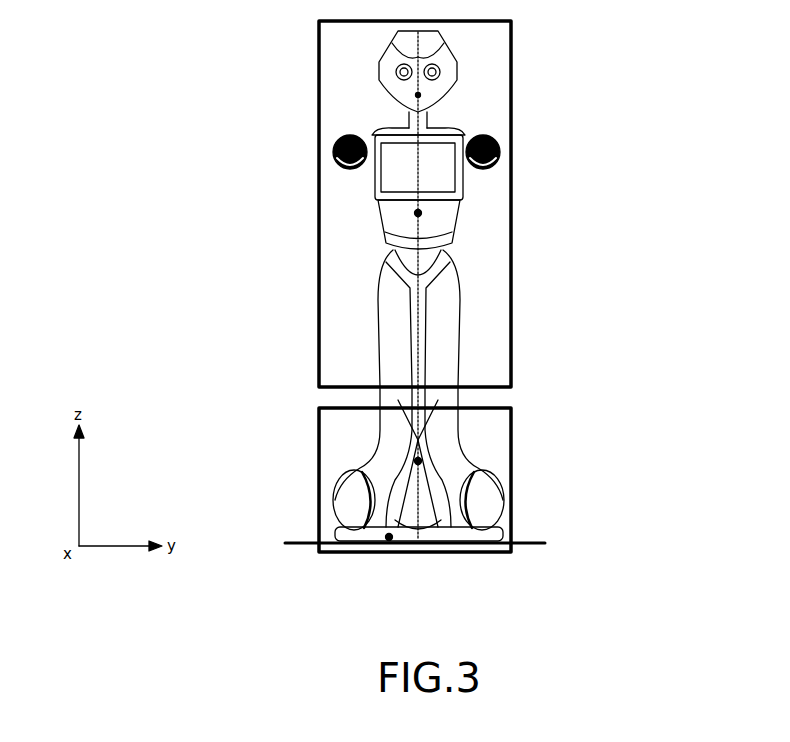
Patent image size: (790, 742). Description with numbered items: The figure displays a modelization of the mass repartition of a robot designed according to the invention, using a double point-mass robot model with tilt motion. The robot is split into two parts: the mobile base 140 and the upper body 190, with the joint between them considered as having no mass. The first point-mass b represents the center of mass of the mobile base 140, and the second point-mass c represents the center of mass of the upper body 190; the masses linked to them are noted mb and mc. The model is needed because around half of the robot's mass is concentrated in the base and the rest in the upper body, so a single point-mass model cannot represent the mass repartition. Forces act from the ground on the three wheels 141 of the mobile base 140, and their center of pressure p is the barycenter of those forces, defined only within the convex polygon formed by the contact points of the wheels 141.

The upper body 190 is at (512, 222).
The mobile base 140 is at (476, 512).
The wheels of mobile base 141 is at (467, 553).